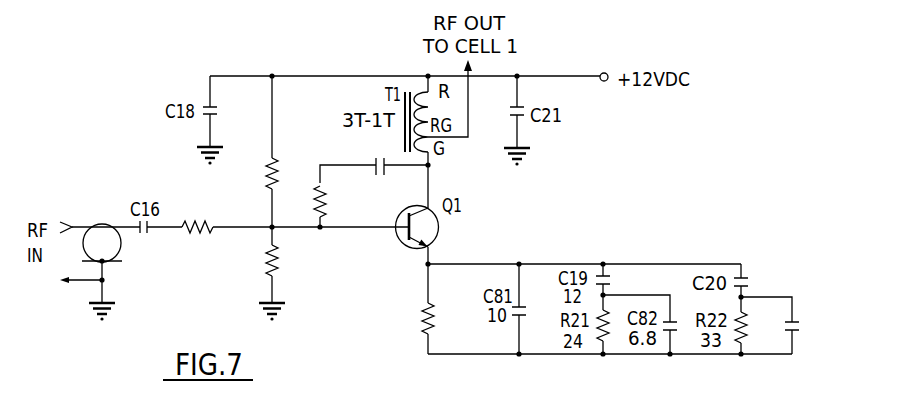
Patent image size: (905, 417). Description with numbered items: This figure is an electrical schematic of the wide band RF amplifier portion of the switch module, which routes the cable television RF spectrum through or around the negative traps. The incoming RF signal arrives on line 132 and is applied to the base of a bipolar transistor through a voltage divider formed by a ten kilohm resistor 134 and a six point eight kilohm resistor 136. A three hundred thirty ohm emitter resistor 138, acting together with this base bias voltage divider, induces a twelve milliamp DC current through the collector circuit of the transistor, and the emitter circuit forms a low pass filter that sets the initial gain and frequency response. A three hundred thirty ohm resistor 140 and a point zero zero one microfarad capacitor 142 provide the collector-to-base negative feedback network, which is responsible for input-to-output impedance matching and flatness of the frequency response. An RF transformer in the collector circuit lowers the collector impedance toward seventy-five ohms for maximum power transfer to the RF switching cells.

The line 132 is at (72, 226).
The 10 Kohm resistor 134 is at (280, 177).
The 6.8 Kohm resistor 136 is at (264, 253).
The emitter resistor 138 is at (438, 312).
The 330 ohm resistor 140 is at (317, 192).
The 0.001 microfarad capacitor 142 is at (380, 174).